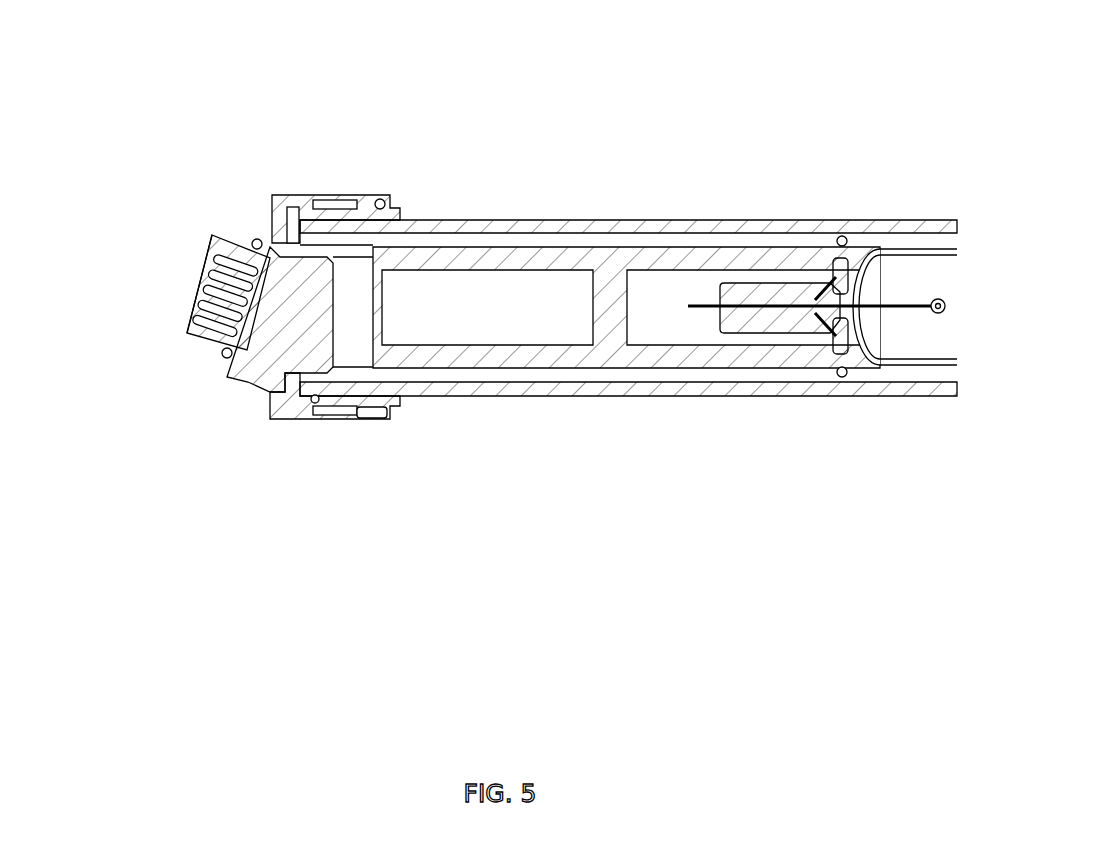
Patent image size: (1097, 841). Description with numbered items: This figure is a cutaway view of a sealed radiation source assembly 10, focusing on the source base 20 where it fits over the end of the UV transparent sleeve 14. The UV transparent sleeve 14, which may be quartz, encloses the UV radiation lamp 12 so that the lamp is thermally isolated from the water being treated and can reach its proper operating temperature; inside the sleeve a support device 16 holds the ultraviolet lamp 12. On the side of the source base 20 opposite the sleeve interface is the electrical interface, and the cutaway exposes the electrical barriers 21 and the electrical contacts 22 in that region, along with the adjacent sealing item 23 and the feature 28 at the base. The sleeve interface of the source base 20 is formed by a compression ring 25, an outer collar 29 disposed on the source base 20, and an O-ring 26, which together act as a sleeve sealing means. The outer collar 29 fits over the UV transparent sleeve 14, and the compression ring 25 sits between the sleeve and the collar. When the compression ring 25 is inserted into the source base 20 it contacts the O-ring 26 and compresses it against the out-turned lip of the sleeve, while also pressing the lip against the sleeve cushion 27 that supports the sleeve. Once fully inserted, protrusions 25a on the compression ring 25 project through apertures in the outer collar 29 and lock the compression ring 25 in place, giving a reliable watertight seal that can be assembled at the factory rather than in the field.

The radiation source assembly 10 is at (588, 62).
The UV radiation lamp 12 is at (875, 248).
The UV transparent sleeve 14 is at (475, 215).
The support device 16 is at (660, 240).
The source base 20 is at (155, 223).
The electrical barriers 21 is at (193, 270).
The electrical contacts 22 is at (212, 253).
The seal bead 23 is at (258, 232).
The compression ring 25 is at (398, 200).
The protrusions 25a is at (363, 415).
The O-ring 26 is at (316, 200).
The sleeve cushion 27 is at (296, 198).
The lower bead 28 is at (208, 350).
The outer collar 29 is at (310, 420).